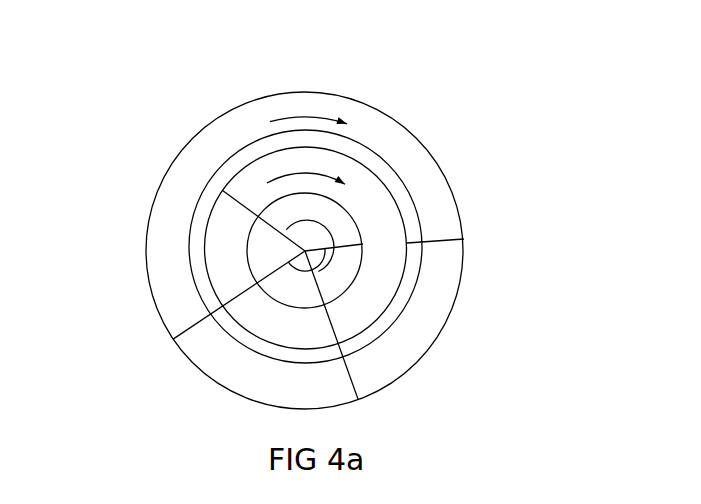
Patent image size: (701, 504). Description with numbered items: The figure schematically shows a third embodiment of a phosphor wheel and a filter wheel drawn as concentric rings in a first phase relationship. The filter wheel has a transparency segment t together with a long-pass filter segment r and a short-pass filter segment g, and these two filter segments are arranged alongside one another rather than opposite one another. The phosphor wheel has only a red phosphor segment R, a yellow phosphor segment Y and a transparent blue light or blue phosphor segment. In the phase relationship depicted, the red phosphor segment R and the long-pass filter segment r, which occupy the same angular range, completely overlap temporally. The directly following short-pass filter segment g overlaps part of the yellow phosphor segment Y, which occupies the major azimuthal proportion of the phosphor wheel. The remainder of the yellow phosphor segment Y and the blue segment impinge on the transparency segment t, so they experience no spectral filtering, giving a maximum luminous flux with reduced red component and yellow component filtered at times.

The transparency segment t is at (317, 103).
The short-pass filter segment g is at (425, 313).
The yellow phosphor segment Y is at (367, 195).
The long-pass filter segment r is at (243, 382).
The red phosphor segment R is at (263, 312).